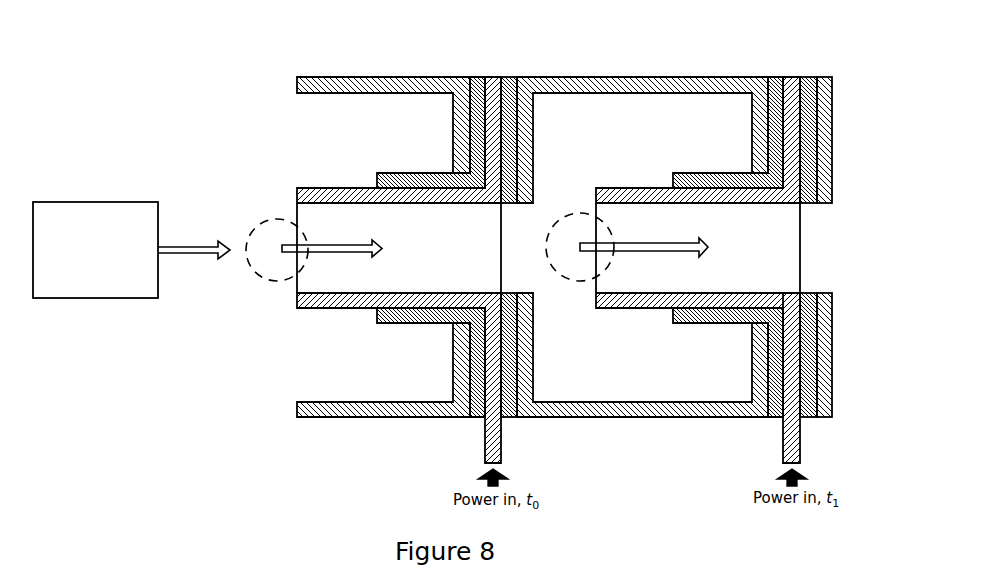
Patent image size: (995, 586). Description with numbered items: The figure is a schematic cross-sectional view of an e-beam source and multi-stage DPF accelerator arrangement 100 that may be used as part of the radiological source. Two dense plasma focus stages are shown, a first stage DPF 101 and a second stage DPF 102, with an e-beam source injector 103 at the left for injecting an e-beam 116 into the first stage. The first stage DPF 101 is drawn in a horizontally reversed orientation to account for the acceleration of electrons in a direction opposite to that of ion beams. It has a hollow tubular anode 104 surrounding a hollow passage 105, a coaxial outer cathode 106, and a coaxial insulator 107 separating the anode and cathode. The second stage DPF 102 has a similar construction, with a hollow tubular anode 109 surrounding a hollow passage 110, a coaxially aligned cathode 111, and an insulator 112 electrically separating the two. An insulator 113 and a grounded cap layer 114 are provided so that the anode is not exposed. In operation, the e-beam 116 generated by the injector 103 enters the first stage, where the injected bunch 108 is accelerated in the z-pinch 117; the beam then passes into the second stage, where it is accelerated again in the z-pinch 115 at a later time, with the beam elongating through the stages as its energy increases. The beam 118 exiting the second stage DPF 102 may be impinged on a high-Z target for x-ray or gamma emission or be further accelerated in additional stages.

The linear accelerator system 100 is at (146, 108).
The first stage DPF 101 is at (512, 66).
The second stage DPF 102 is at (827, 66).
The e-beam source injector 103 is at (120, 202).
The hollow tubular anode 104 is at (342, 308).
The hollow passage 105 is at (458, 256).
The coaxial outer cathode 106 is at (382, 418).
The coaxial insulator 107 is at (420, 325).
The electron bunch entering first cavity 108 is at (260, 265).
The hollow tubular anode 109 is at (640, 308).
The hollow passage 110 is at (777, 256).
The coaxially aligned cathode 111 is at (685, 418).
The insulator 112 is at (718, 323).
The insulator 113 is at (808, 417).
The grounded cap layer 114 is at (832, 337).
The z-pinch 115 is at (597, 280).
The e-beam 116 is at (183, 245).
The z-pinch 117 is at (350, 243).
The beam 118 is at (670, 243).